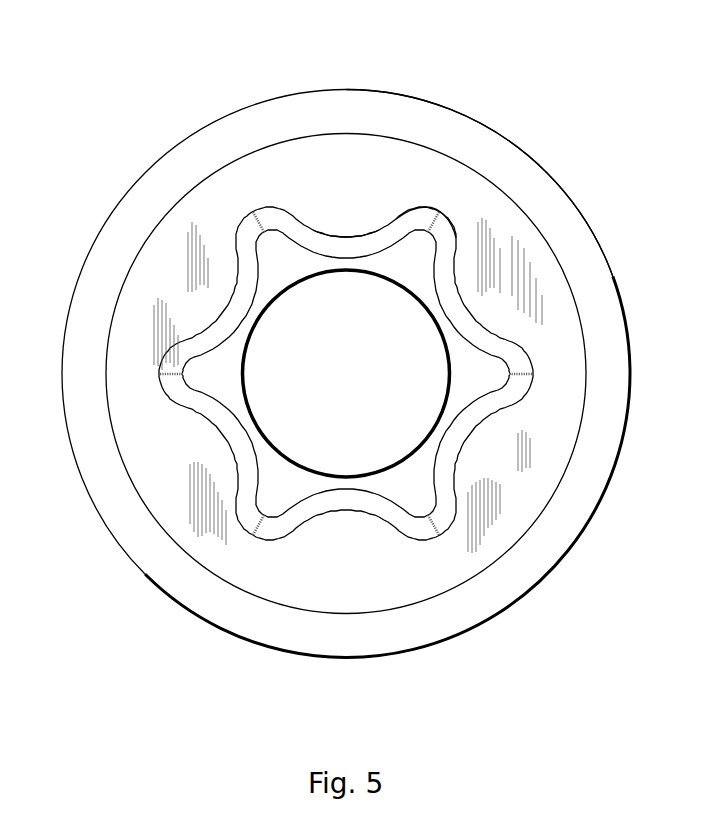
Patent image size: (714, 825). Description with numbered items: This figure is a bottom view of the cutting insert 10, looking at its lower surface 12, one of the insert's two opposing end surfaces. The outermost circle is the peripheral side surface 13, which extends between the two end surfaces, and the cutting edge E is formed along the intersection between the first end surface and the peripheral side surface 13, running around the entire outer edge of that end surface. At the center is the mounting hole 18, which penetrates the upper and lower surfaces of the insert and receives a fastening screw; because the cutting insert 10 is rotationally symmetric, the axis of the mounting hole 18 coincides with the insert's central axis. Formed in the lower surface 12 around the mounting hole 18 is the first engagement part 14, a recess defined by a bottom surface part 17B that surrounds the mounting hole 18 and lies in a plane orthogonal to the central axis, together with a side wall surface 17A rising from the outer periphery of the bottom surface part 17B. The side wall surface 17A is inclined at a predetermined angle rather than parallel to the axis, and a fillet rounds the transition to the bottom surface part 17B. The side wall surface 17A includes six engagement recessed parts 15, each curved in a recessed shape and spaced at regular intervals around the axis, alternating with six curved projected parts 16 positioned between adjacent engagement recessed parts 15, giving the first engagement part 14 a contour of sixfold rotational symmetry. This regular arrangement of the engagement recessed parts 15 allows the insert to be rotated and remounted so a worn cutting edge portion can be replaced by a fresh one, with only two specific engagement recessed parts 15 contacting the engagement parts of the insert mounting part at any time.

The cutting insert 10 is at (213, 143).
The cutting edge E is at (468, 118).
The lower surface 12 is at (318, 568).
The peripheral side surface 13 is at (340, 637).
The first engagement part 14 is at (417, 528).
The engagement recessed part 15 is at (442, 520).
The curved projected part 16 is at (457, 438).
The side wall surface 17A is at (337, 237).
The bottom surface part 17B is at (407, 252).
The mounting hole 18 is at (288, 462).